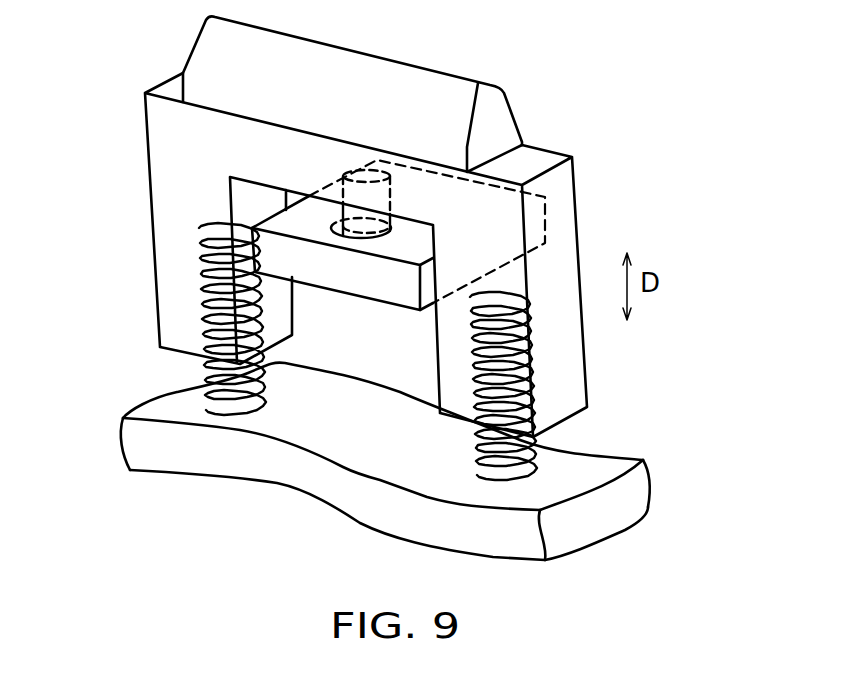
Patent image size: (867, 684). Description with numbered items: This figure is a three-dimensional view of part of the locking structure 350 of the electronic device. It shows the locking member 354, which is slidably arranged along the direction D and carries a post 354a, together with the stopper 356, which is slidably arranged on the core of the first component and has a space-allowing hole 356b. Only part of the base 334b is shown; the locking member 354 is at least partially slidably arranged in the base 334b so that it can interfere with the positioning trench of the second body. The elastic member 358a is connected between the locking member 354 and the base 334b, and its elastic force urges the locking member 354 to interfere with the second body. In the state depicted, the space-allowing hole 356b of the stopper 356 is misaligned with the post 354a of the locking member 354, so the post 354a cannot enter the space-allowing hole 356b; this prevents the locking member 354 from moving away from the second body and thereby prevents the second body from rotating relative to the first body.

The locking structure 350 is at (597, 143).
The locking member 354 is at (380, 77).
The post 354a is at (342, 230).
The stopper 356 is at (415, 245).
The space-allowing hole 356b is at (332, 225).
The elastic member 358a is at (548, 458).
The base 334b is at (623, 498).